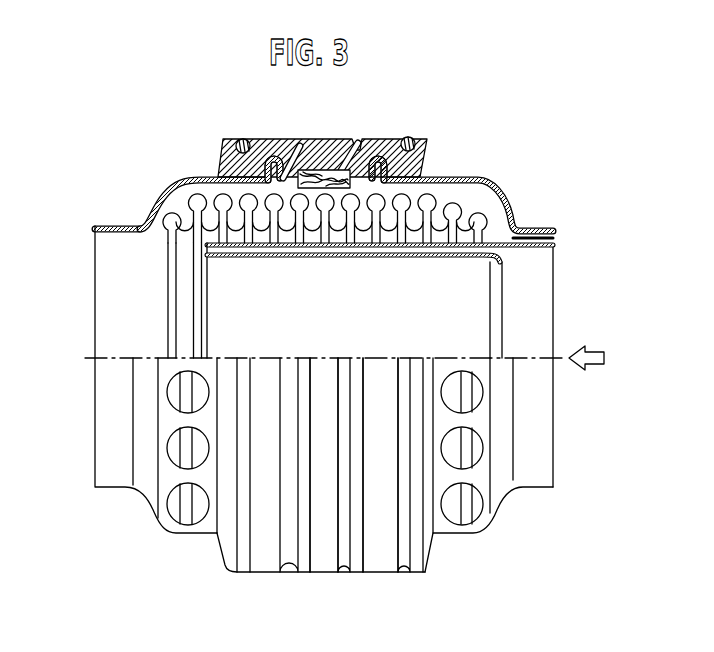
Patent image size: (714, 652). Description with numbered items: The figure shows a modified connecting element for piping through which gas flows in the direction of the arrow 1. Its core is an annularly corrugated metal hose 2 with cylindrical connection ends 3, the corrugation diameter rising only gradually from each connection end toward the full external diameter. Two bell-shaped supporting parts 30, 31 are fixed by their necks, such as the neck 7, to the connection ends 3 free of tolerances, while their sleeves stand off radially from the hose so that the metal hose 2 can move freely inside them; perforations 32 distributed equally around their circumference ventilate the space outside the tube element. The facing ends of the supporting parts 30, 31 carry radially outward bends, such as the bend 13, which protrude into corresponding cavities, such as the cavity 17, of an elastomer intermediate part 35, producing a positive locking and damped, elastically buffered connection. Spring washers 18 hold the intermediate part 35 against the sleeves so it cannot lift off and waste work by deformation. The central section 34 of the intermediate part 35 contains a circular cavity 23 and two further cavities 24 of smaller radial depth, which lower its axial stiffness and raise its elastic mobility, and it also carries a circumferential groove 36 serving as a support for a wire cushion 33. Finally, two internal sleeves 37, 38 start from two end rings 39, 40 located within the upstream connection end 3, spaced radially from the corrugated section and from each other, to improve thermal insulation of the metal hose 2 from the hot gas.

The arrow 1 is at (598, 370).
The annularly corrugated metal hose 2 is at (480, 210).
The connection ends 3 is at (118, 320).
The neck 7 is at (528, 470).
The bend 13 is at (388, 171).
The cavity 17 is at (377, 160).
The spring washers 18 is at (406, 567).
The circular cavity 23 is at (325, 561).
The further cavities 24 is at (292, 563).
The supporting part 30 is at (150, 203).
The supporting part 31 is at (512, 208).
The perforations 32 is at (177, 534).
The wire cushion 33 is at (300, 156).
The central section 34 is at (349, 152).
The intermediate part 35 is at (382, 558).
The circumferential groove 36 is at (297, 168).
The internal sleeve 37 is at (207, 245).
The internal sleeve 38 is at (207, 255).
The end ring 39 is at (556, 238).
The end ring 40 is at (540, 304).